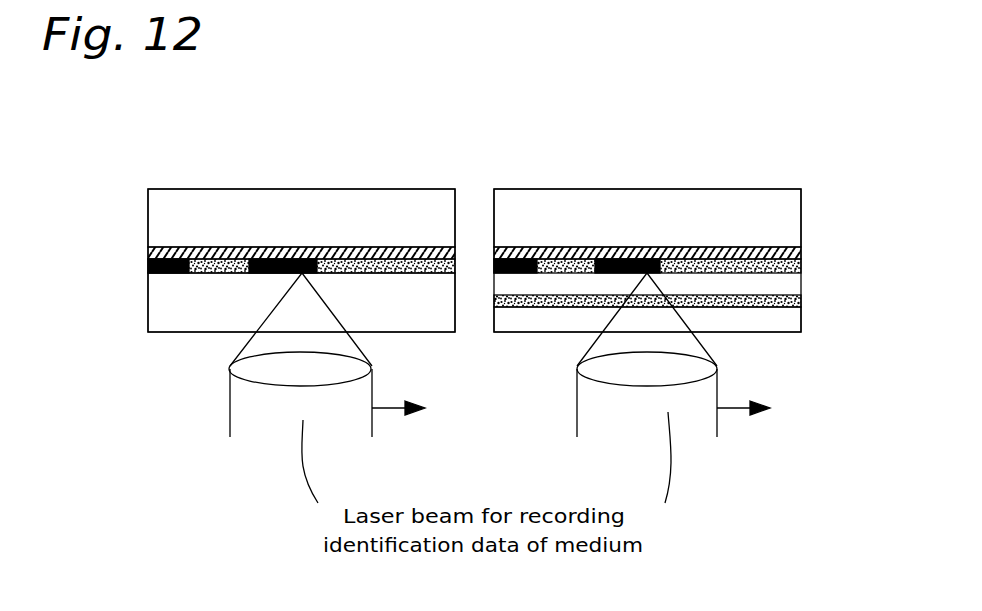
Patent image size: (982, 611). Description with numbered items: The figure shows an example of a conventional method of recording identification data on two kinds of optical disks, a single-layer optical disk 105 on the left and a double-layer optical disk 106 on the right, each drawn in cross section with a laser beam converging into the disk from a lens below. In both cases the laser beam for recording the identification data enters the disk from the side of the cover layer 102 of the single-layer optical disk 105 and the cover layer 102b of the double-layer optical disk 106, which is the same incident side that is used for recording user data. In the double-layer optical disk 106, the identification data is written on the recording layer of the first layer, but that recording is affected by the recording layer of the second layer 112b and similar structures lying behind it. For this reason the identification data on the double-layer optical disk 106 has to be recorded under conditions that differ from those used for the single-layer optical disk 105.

The cover layer 102 is at (301, 302).
The cover layer 102b is at (522, 313).
The single-layer optical disk 105 is at (128, 191).
The double-layer optical disk 106 is at (813, 191).
The recording layer of a second layer 112b is at (747, 307).